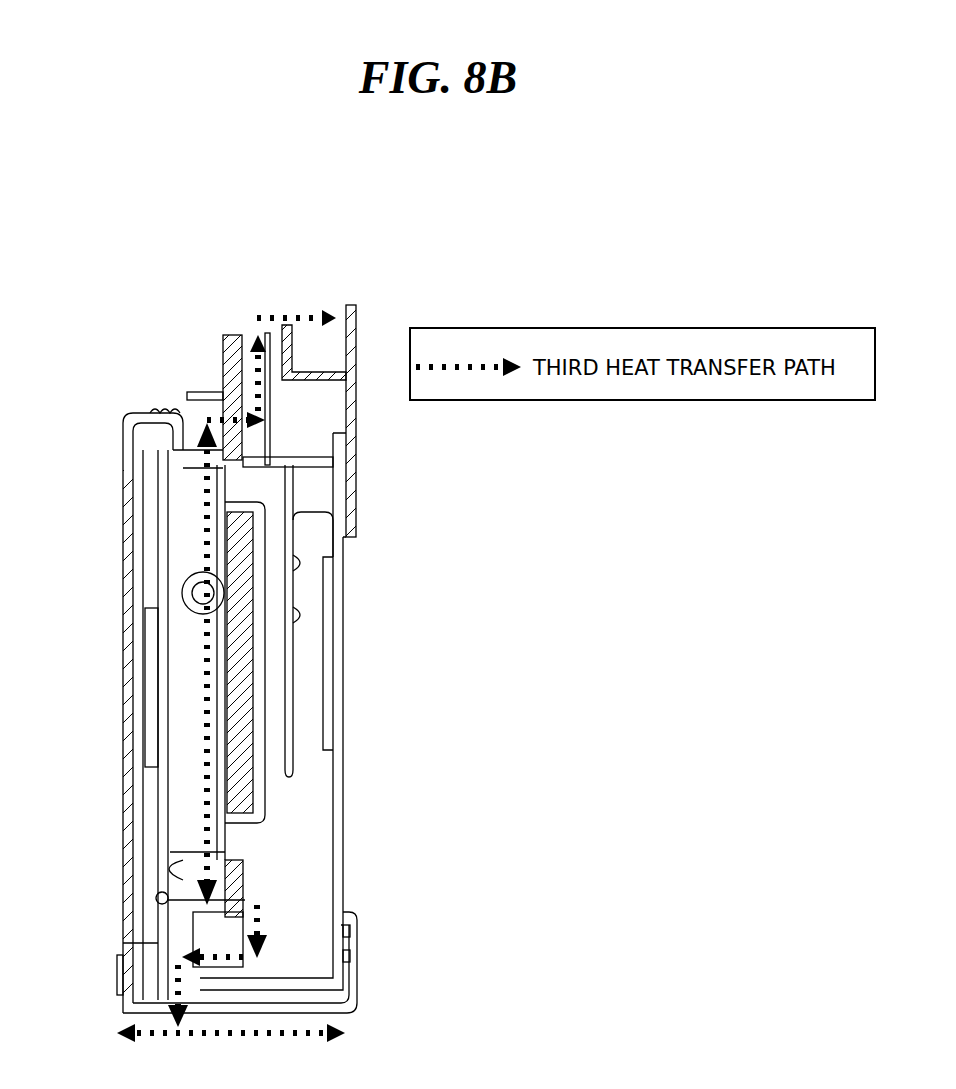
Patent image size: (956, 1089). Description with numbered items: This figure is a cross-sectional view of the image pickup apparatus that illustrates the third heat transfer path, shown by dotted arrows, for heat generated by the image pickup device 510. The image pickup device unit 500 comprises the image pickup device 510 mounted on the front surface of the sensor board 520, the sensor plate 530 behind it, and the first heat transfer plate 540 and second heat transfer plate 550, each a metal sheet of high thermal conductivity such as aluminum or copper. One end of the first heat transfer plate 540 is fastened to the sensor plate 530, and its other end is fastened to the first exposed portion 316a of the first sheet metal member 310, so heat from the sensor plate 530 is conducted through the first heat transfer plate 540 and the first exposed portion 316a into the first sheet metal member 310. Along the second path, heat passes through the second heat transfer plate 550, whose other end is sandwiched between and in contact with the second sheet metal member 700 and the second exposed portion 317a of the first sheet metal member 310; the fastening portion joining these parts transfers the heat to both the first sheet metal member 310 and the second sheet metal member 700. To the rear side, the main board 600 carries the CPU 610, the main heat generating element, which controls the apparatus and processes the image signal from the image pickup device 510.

The first sheet metal member 310 is at (364, 943).
The first exposed portion 316a is at (285, 362).
The second exposed portion 317a is at (200, 993).
The image pickup device unit 500 is at (333, 662).
The image pickup device 510 is at (243, 678).
The sensor board 520 is at (217, 740).
The sensor plate 530 is at (225, 845).
The first heat transfer plate 540 is at (262, 437).
The second heat transfer plate 550 is at (253, 928).
The main board 600 is at (166, 584).
The CPU 610 is at (152, 663).
The second sheet metal member 700 is at (128, 767).